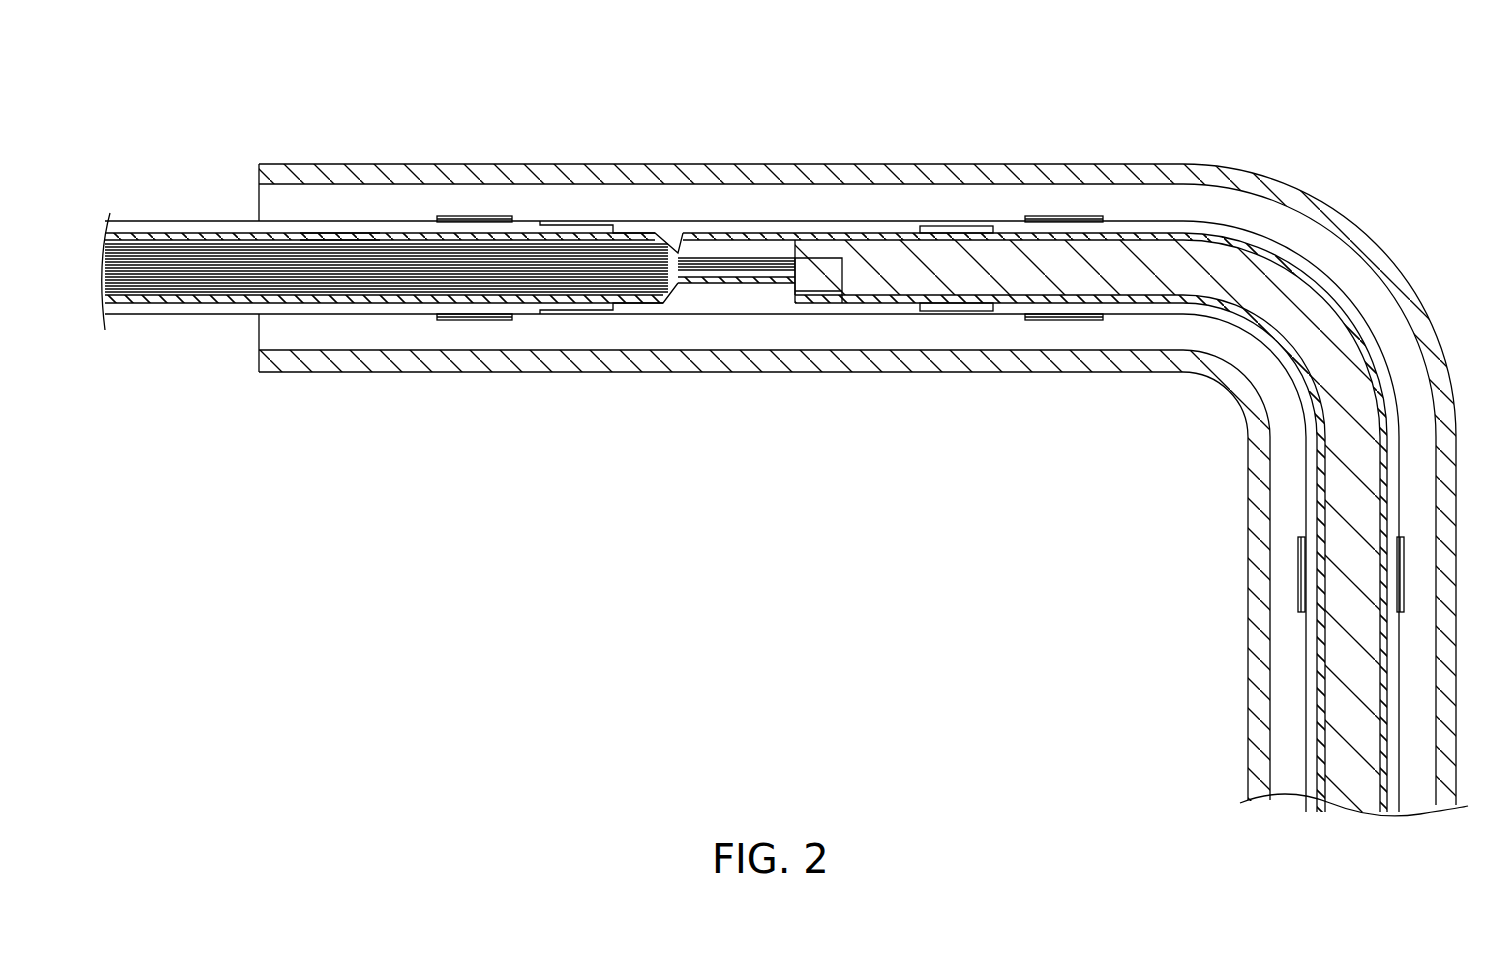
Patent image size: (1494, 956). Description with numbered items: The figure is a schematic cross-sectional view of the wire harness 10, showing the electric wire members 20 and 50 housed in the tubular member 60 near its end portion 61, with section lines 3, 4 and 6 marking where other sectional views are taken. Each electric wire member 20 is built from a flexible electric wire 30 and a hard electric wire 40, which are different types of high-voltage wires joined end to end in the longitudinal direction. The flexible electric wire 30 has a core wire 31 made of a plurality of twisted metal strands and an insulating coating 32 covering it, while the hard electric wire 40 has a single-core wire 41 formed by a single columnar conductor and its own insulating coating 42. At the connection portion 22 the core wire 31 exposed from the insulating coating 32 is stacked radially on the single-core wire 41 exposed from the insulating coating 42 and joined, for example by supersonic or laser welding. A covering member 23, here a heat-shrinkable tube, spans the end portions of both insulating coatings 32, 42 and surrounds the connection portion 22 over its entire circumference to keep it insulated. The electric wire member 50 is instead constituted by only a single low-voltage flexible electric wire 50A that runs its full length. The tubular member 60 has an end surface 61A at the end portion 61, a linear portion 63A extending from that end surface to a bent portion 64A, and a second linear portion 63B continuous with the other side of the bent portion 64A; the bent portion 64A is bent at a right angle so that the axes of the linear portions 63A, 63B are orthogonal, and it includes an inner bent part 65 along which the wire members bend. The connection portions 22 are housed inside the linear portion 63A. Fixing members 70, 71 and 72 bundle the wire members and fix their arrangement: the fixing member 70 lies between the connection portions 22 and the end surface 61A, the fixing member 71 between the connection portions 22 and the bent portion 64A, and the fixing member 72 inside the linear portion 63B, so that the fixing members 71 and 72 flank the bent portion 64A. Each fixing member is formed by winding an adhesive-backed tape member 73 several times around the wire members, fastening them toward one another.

The wire harness 10 is at (1279, 86).
The electric wire member 20 is at (134, 306).
The connection portion 22 is at (688, 244).
The covering member 23 is at (736, 240).
The flexible electric wire 30 is at (405, 132).
The core wire 31 is at (316, 244).
The insulating coating 32 is at (366, 240).
The hard electric wire 40 is at (975, 128).
The single-core wire 41 is at (897, 244).
The insulating coating 42 is at (943, 233).
The electric wire member 50 is at (636, 224).
The flexible electric wire 50A is at (756, 304).
The tubular member 60 is at (266, 163).
The end portion 61 is at (262, 376).
The end surface 61A is at (257, 358).
The linear portion 63A is at (543, 163).
The linear portion 63B is at (1248, 690).
The bent portion 64A is at (1383, 252).
The inner bent part 65 is at (1236, 433).
The fixing member 70 is at (466, 322).
The fixing member 71 is at (1045, 321).
The fixing member 72 is at (1298, 545).
The tape member 73 is at (492, 322).
The section line 3- 3 is at (1065, 95).
The section line 4- 4 is at (1398, 264).
The section line 6- 6 is at (474, 95).